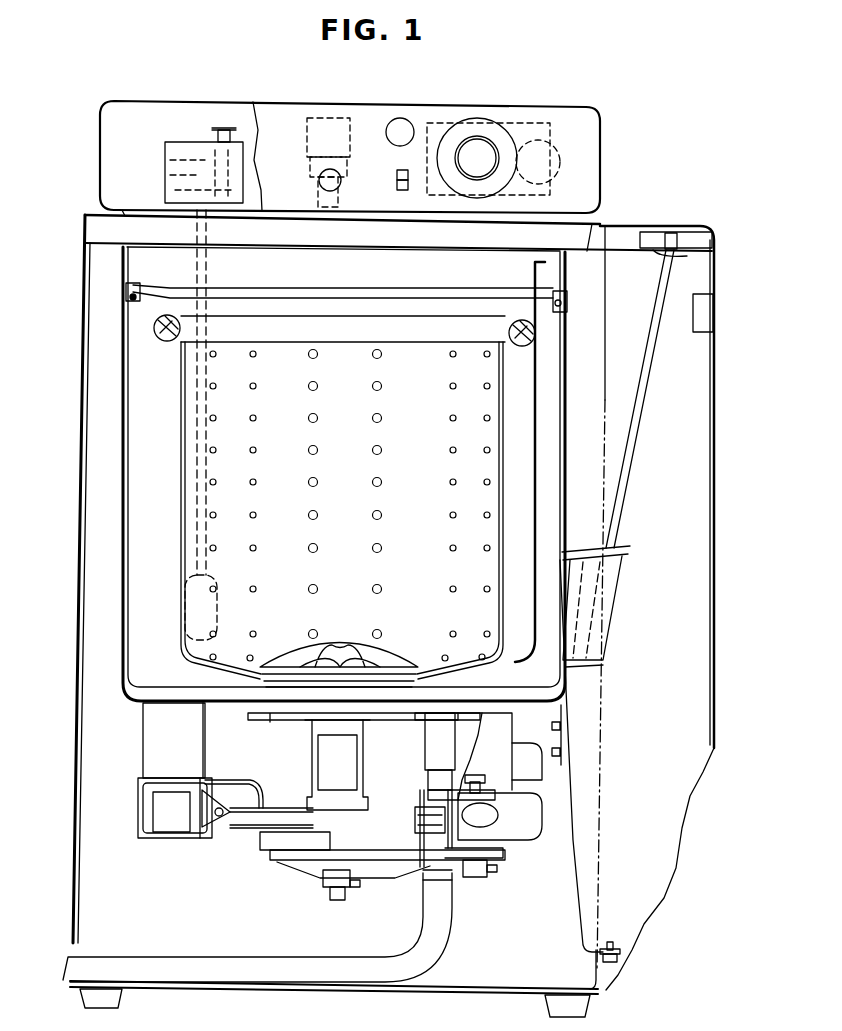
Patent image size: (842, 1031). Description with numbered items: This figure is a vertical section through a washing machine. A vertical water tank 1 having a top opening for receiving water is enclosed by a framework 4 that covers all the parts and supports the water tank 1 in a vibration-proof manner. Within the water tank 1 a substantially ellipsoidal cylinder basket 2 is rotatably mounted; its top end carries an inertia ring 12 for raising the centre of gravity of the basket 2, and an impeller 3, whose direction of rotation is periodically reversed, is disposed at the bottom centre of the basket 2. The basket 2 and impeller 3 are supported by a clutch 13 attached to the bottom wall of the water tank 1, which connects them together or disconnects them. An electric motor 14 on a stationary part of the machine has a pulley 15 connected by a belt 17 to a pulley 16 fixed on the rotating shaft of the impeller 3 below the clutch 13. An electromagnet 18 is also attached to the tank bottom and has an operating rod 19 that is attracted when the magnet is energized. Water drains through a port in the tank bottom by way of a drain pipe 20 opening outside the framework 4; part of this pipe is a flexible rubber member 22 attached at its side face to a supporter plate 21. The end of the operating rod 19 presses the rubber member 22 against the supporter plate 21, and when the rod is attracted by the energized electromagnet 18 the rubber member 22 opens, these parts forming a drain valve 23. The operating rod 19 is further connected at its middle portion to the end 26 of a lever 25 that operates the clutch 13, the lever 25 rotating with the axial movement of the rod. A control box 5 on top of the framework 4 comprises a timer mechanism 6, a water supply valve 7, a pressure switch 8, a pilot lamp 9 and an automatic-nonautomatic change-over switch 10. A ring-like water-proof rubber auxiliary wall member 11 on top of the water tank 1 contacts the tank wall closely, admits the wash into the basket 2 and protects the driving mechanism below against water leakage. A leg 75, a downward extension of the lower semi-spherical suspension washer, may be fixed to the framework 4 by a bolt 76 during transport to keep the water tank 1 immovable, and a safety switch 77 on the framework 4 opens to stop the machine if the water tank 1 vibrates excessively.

The water tank 1 is at (130, 382).
The basket 2 is at (180, 432).
The impeller 3 is at (372, 652).
The framework 4 is at (700, 423).
The control box 5 is at (443, 104).
The timer mechanism 6 is at (512, 123).
The water supply valve 7 is at (332, 118).
The pressure switch 8 is at (183, 140).
The pilot lamp 9 is at (398, 118).
The automatic-nonautomatic change-over switch 10 is at (396, 175).
The auxiliary wall member 11 is at (565, 266).
The inertia ring 12 is at (535, 330).
The clutch 13 is at (312, 750).
The electric motor 14 is at (520, 827).
The pulley 15 is at (503, 850).
The pulley 16 is at (282, 862).
The belt 17 is at (420, 840).
The electromagnet 18 is at (197, 840).
The operating rod 19 is at (248, 816).
The drain pipe 20 is at (452, 912).
The supporter plate 21 is at (427, 760).
The rubber member 22 is at (420, 805).
The drain valve 23 is at (410, 867).
The lever 25 is at (341, 830).
The end of lever 26 is at (300, 810).
The leg 75 is at (563, 777).
The bolt 76 is at (610, 940).
The safety switch 77 is at (705, 337).